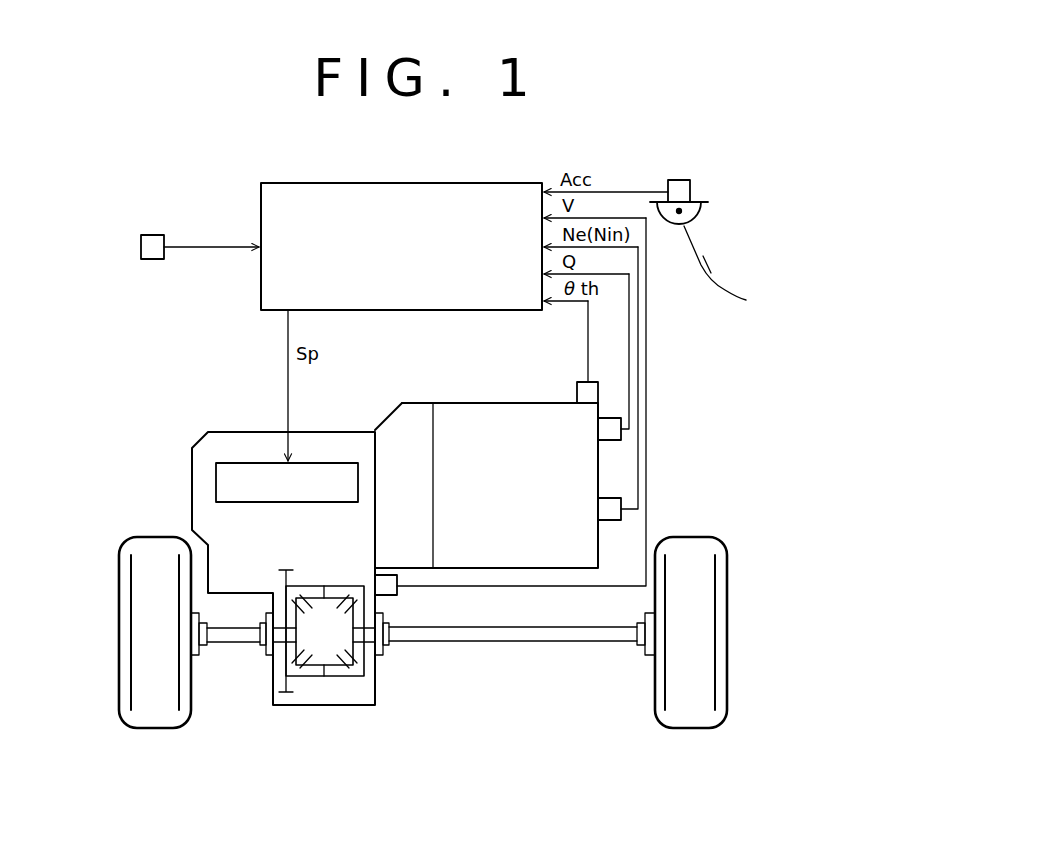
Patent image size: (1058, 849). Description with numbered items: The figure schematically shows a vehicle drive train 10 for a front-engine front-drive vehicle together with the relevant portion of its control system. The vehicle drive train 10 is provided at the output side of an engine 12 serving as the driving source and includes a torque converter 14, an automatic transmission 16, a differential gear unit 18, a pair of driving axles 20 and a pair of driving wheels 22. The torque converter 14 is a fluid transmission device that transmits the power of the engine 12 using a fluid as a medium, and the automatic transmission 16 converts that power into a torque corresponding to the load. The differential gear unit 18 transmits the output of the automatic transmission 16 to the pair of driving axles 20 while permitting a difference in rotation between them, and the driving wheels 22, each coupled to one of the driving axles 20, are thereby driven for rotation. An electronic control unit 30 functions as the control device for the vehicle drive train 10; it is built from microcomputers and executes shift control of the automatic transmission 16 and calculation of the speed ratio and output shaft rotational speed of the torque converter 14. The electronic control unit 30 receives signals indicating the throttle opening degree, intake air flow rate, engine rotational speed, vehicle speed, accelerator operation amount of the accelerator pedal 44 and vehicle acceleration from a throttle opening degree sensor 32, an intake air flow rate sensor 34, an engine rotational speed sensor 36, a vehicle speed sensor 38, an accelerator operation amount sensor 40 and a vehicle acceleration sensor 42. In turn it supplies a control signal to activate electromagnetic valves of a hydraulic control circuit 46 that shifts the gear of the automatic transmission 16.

The vehicle drive train 10 is at (198, 406).
The engine 12 is at (458, 412).
The torque converter 14 is at (398, 405).
The automatic transmission 16 is at (200, 510).
The differential gear unit 18 is at (359, 684).
The driving axles 20 is at (230, 638).
The driving wheels 22 is at (168, 686).
The electronic control unit 30 is at (466, 190).
The throttle opening degree sensor 32 is at (580, 393).
The intake air flow rate sensor 34 is at (607, 437).
The engine rotational speed sensor 36 is at (611, 514).
The vehicle speed sensor 38 is at (398, 597).
The accelerator operation amount sensor 40 is at (676, 180).
The vehicle acceleration sensor 42 is at (141, 247).
The accelerator pedal 44 is at (735, 270).
The hydraulic control circuit 46 is at (225, 483).